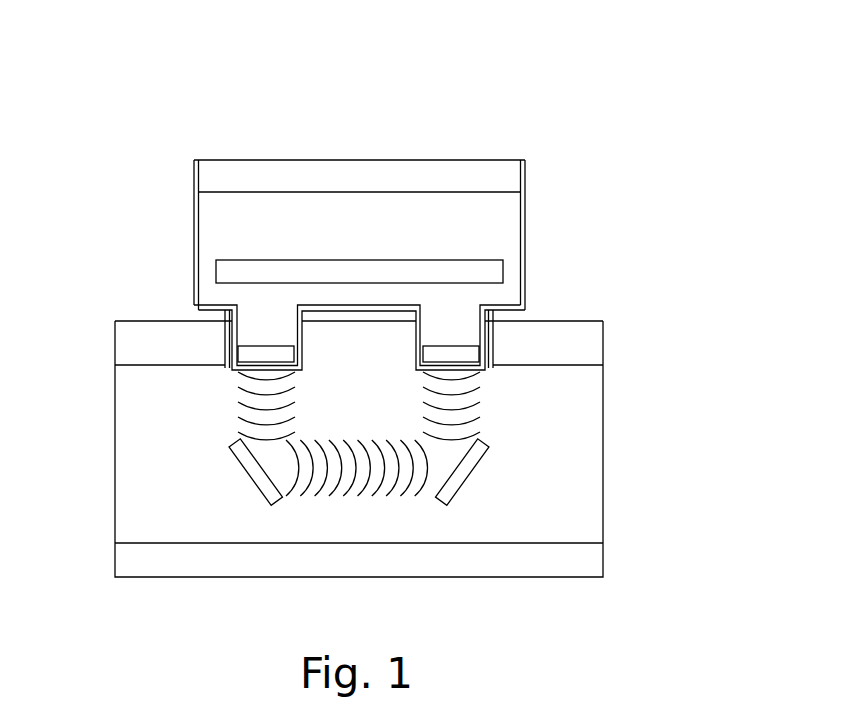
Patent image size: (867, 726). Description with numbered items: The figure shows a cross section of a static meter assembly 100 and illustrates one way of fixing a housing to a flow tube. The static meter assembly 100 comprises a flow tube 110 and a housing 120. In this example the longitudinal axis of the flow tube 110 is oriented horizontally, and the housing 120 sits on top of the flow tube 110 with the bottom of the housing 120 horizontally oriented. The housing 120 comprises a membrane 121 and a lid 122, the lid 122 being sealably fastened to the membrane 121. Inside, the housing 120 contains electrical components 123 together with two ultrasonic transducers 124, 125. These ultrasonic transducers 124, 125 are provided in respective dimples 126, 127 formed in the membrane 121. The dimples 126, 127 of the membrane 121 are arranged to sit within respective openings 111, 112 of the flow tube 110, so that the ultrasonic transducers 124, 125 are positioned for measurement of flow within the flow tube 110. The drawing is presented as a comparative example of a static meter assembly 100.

The static meter assembly 100 is at (554, 57).
The flow tube 110 is at (613, 321).
The opening 111 is at (232, 367).
The opening 112 is at (482, 370).
The housing 120 is at (194, 160).
The membrane 121 is at (192, 248).
The lid 122 is at (374, 158).
The electrical components 123 is at (503, 260).
The ultrasonic transducer 124 is at (277, 343).
The ultrasonic transducer 125 is at (453, 343).
The dimple 126 is at (223, 340).
The dimple 127 is at (493, 340).